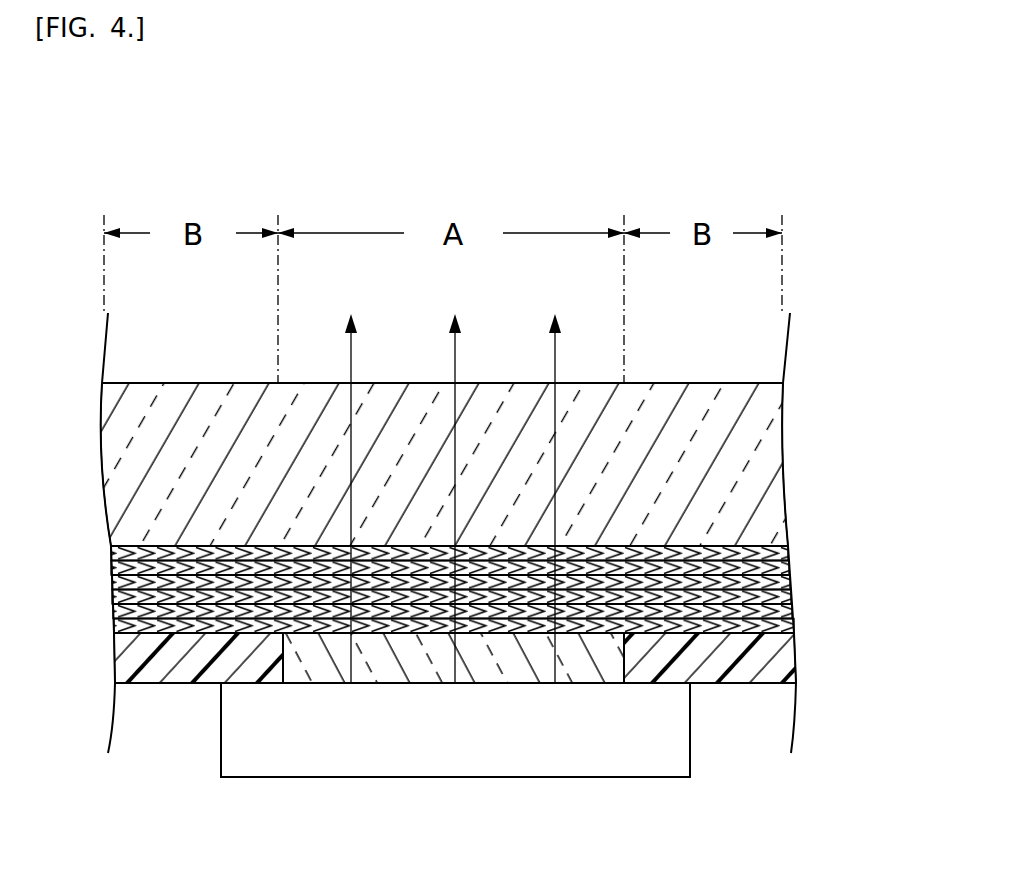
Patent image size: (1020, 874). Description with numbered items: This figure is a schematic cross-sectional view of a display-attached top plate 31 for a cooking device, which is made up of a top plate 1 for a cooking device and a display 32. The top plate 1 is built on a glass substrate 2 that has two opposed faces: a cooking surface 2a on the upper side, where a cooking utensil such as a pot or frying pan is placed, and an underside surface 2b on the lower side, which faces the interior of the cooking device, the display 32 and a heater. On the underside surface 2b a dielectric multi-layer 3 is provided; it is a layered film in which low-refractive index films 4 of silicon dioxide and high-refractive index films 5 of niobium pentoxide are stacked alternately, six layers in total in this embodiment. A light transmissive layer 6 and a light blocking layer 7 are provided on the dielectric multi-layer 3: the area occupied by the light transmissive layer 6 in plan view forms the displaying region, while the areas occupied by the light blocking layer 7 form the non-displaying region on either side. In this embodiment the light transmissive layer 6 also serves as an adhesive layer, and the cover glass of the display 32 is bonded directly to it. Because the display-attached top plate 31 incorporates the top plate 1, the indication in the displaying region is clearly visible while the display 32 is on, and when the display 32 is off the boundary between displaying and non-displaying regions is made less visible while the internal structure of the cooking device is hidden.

The display-attached top plate for a cooking device 31 is at (147, 150).
The top plate for a cooking device 1 is at (703, 381).
The glass substrate 2 is at (755, 463).
The cooking surface 2a is at (201, 383).
The underside surface 2b is at (663, 546).
The dielectric multi-layer 3 is at (868, 507).
The low-refractive index film 4 is at (788, 553).
The high-refractive index film 5 is at (789, 568).
The light transmissive layer 6 is at (311, 676).
The light blocking layer 7 is at (171, 676).
The display 32 is at (607, 778).